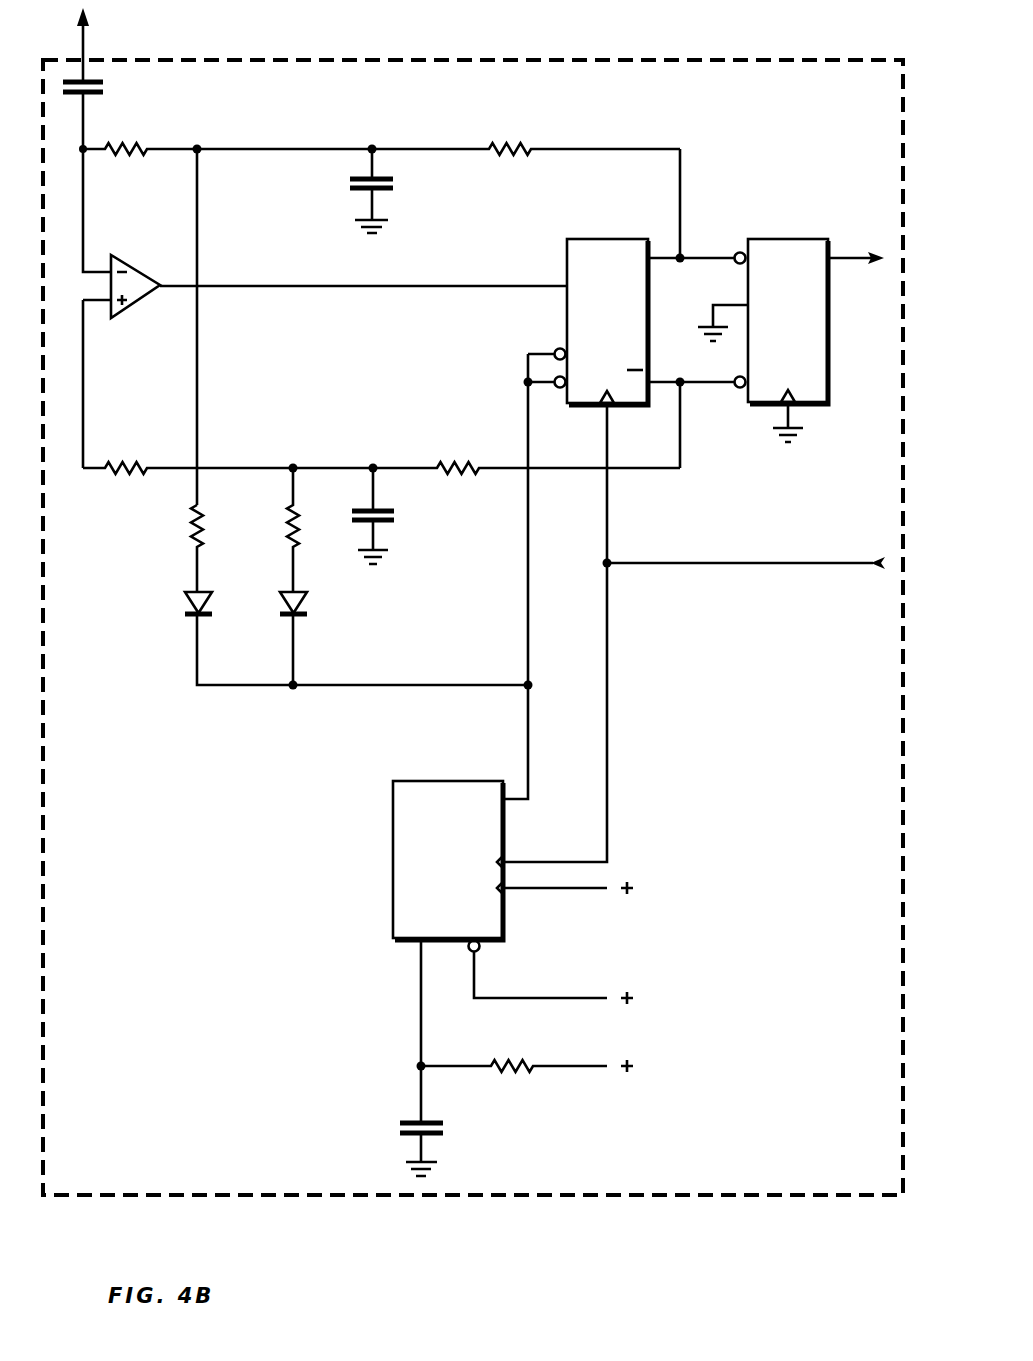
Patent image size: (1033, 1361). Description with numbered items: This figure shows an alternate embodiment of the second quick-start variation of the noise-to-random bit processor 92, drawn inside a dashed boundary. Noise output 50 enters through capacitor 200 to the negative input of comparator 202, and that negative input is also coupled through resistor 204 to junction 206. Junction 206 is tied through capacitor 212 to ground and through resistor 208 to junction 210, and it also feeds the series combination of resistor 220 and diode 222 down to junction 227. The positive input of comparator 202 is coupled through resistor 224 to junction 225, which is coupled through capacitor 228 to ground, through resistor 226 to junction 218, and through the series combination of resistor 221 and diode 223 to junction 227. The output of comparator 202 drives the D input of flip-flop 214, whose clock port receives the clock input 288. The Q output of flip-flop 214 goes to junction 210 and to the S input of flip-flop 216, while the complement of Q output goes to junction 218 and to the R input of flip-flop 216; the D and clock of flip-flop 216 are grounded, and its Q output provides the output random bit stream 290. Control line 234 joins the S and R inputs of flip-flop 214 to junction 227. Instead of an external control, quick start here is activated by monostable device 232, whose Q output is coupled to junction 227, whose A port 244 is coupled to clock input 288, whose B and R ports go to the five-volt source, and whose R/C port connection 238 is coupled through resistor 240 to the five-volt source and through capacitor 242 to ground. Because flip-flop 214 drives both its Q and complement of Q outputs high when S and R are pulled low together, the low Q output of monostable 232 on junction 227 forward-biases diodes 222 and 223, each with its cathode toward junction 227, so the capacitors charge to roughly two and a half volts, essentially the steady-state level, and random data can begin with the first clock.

The noise output 50 is at (86, 42).
The noise-to-random bit processor 92 is at (740, 1196).
The capacitor 200 is at (105, 89).
The comparator 202 is at (140, 305).
The resistor 204 is at (127, 160).
The junction 206 is at (198, 147).
The resistor 208 is at (511, 146).
The junction 210 is at (683, 256).
The capacitor 212 is at (348, 184).
The flip-flop 214 is at (601, 238).
The flip-flop 216 is at (832, 376).
The junction 218 is at (683, 385).
The resistor 220 is at (190, 530).
The resistor 221 is at (285, 530).
The diode 222 is at (193, 618).
The diode 223 is at (300, 618).
The resistor 224 is at (129, 458).
The junction 225 is at (292, 464).
The resistor 226 is at (458, 462).
The junction 227 is at (525, 684).
The capacitor 228 is at (399, 516).
The monostable device 232 is at (393, 885).
The control line 234 is at (530, 576).
The R/C node 238 is at (419, 997).
The resistor 240 is at (514, 1076).
The capacitor 242 is at (399, 1125).
The A port 244 is at (610, 774).
The clock input 288 is at (786, 566).
The output random bit stream 290 is at (851, 256).